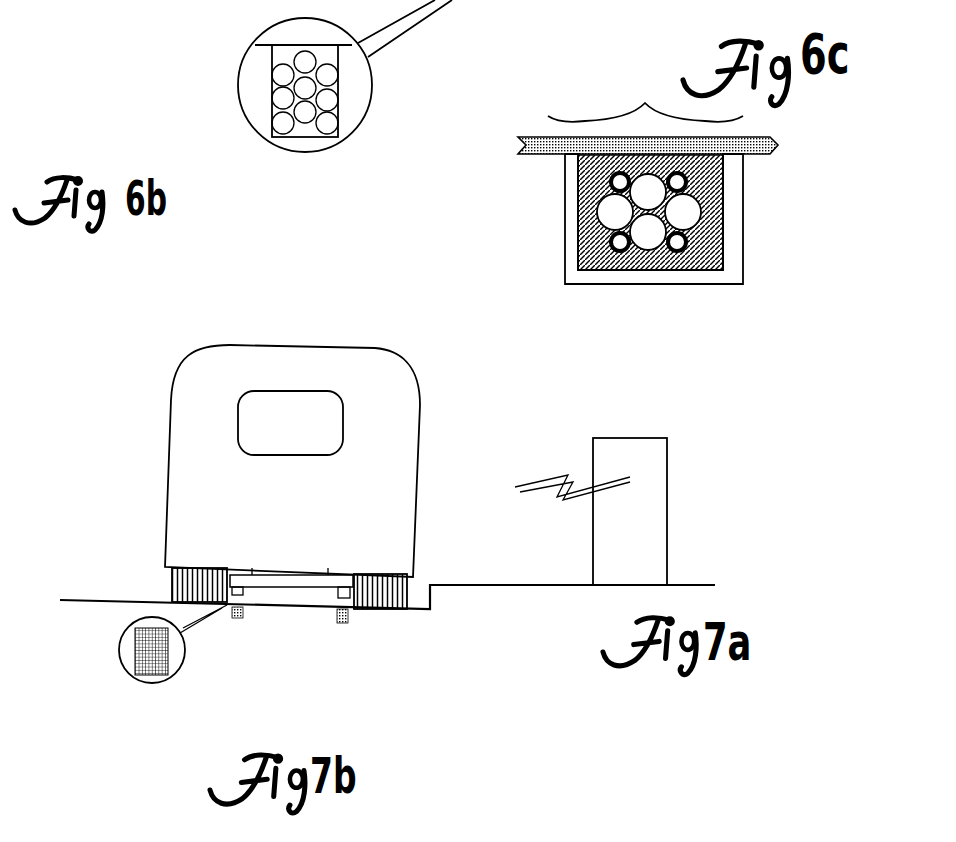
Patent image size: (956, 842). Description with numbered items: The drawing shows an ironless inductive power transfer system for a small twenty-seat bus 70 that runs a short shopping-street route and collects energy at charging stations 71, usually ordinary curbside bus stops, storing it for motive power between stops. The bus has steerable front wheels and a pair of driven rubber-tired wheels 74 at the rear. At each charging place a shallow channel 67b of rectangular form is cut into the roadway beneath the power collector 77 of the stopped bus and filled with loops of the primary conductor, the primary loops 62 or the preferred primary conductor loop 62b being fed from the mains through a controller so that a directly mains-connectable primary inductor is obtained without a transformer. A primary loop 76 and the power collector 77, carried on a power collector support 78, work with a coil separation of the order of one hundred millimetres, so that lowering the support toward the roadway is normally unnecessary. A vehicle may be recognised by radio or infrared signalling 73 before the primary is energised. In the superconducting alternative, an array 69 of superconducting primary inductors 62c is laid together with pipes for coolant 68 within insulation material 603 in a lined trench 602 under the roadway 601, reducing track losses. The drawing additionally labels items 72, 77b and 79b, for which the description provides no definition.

In FIG. 6B, the primary loops 62 is at (37, 0).
In FIG. 6B, the primary conductor loop 62b is at (278, 107).
In FIG. 6B, the shallow channel 67b is at (280, 105).
In FIG. 6C, the array of superconducting primary inductors 69 is at (645, 89).
In FIG. 6C, the roadway 601 is at (522, 156).
In FIG. 6C, the lined trench 602 is at (705, 285).
In FIG. 6C, the insulation material 603 is at (723, 232).
In FIG. 6C, the superconducting primary inductors 62c is at (573, 207).
In FIG. 6C, the pipes for coolant 68 is at (583, 273).
In FIG. 7A, the bus 70 is at (340, 344).
In FIG. 7A, the charging station 71 is at (437, 585).
In FIG. 7A, the base station 72 is at (627, 435).
In FIG. 7A, the radio or infrared signalling 73 is at (513, 483).
In FIG. 7B, the driven rubber-tired wheels 74 is at (170, 592).
In FIG. 7B, the primary loop 76 is at (350, 623).
In FIG. 7B, the power collector 77 is at (333, 597).
In FIG. 7B, the power collector support 78 is at (268, 585).
In FIG. 7B, the foot detail 77b is at (172, 660).
In FIG. 7B, the pad grid 79b is at (122, 662).